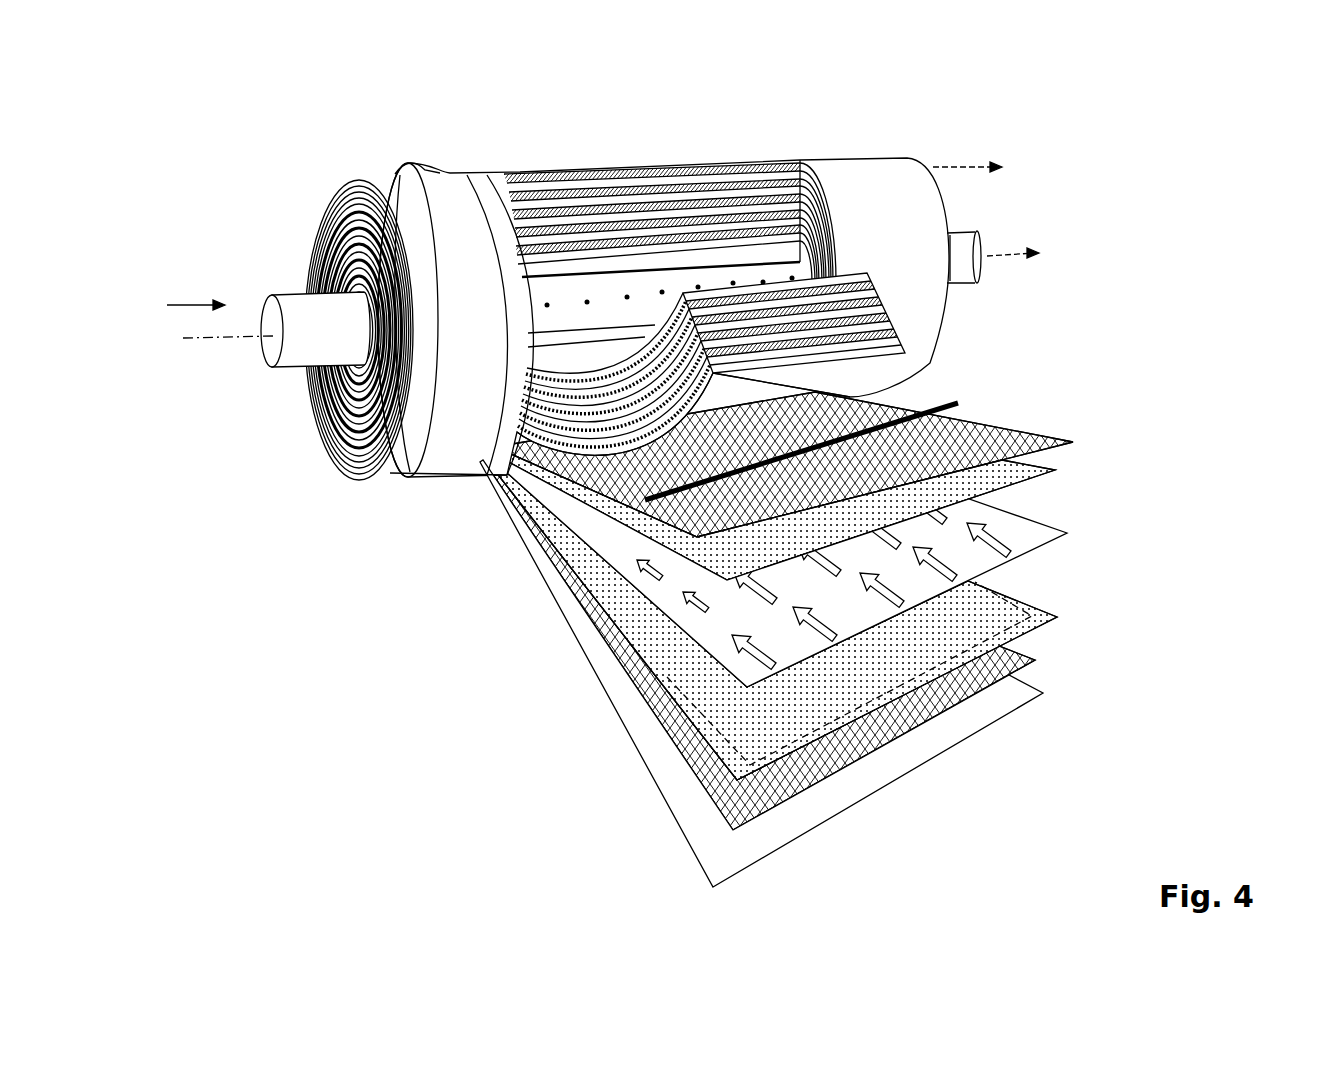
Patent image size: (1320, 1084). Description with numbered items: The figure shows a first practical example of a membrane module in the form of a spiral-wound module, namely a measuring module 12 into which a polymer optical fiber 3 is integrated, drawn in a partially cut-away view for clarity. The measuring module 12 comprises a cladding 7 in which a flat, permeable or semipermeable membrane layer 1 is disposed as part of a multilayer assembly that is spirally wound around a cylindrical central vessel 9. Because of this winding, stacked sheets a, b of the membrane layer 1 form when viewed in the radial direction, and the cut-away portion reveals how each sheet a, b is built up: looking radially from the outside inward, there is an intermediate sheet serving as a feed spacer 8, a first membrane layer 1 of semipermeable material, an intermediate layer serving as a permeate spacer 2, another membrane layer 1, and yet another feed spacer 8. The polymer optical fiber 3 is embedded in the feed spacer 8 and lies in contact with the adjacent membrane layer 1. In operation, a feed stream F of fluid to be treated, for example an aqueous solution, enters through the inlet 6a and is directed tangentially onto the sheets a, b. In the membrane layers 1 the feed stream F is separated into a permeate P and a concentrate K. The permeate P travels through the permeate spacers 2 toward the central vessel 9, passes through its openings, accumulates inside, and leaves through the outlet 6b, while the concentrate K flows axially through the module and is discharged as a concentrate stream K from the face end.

The membrane layer 1 is at (852, 396).
The permeate spacer 2 is at (713, 645).
The polymer optical fiber 3 is at (960, 398).
The inlet 6a is at (307, 278).
The outlet 6b is at (980, 283).
The cladding 7 is at (902, 246).
The feed spacer 8 is at (630, 467).
The central vessel 9 is at (649, 293).
The measuring module 12 is at (307, 557).
The sheet a is at (335, 200).
The sheet b is at (332, 247).
The feed stream F is at (185, 299).
The concentrate K is at (983, 166).
The permeate P is at (1029, 256).